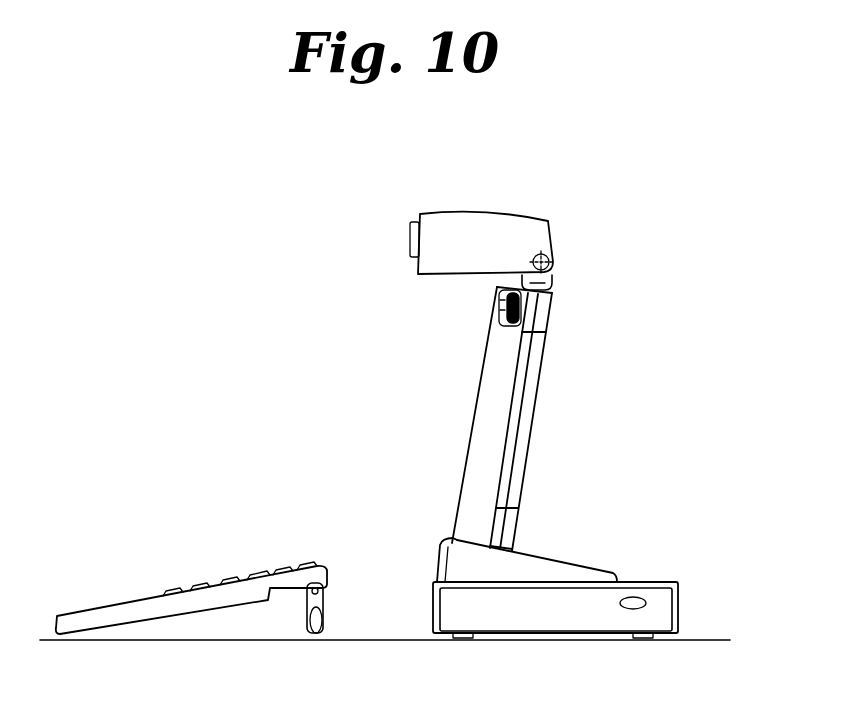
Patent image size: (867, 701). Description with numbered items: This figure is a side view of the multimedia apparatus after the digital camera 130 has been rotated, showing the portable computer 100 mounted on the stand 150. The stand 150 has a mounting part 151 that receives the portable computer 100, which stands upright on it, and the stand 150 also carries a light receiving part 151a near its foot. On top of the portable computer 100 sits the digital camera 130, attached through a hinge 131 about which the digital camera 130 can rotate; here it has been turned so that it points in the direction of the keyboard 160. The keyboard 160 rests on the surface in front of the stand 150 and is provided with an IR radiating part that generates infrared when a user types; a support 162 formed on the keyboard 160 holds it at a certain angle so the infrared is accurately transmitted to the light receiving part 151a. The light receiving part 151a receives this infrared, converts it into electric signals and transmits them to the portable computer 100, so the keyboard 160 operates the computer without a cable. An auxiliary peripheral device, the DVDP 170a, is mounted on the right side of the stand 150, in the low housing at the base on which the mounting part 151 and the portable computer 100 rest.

The portable computer 100 is at (455, 402).
The digital camera 130 is at (486, 203).
The hinge 131 is at (548, 258).
The stand 150 is at (652, 578).
The mounting part 151 is at (557, 555).
The light receiving part 151a is at (445, 552).
The keyboard 160 is at (113, 598).
The support 162 is at (322, 616).
The DVDP 170a is at (668, 610).